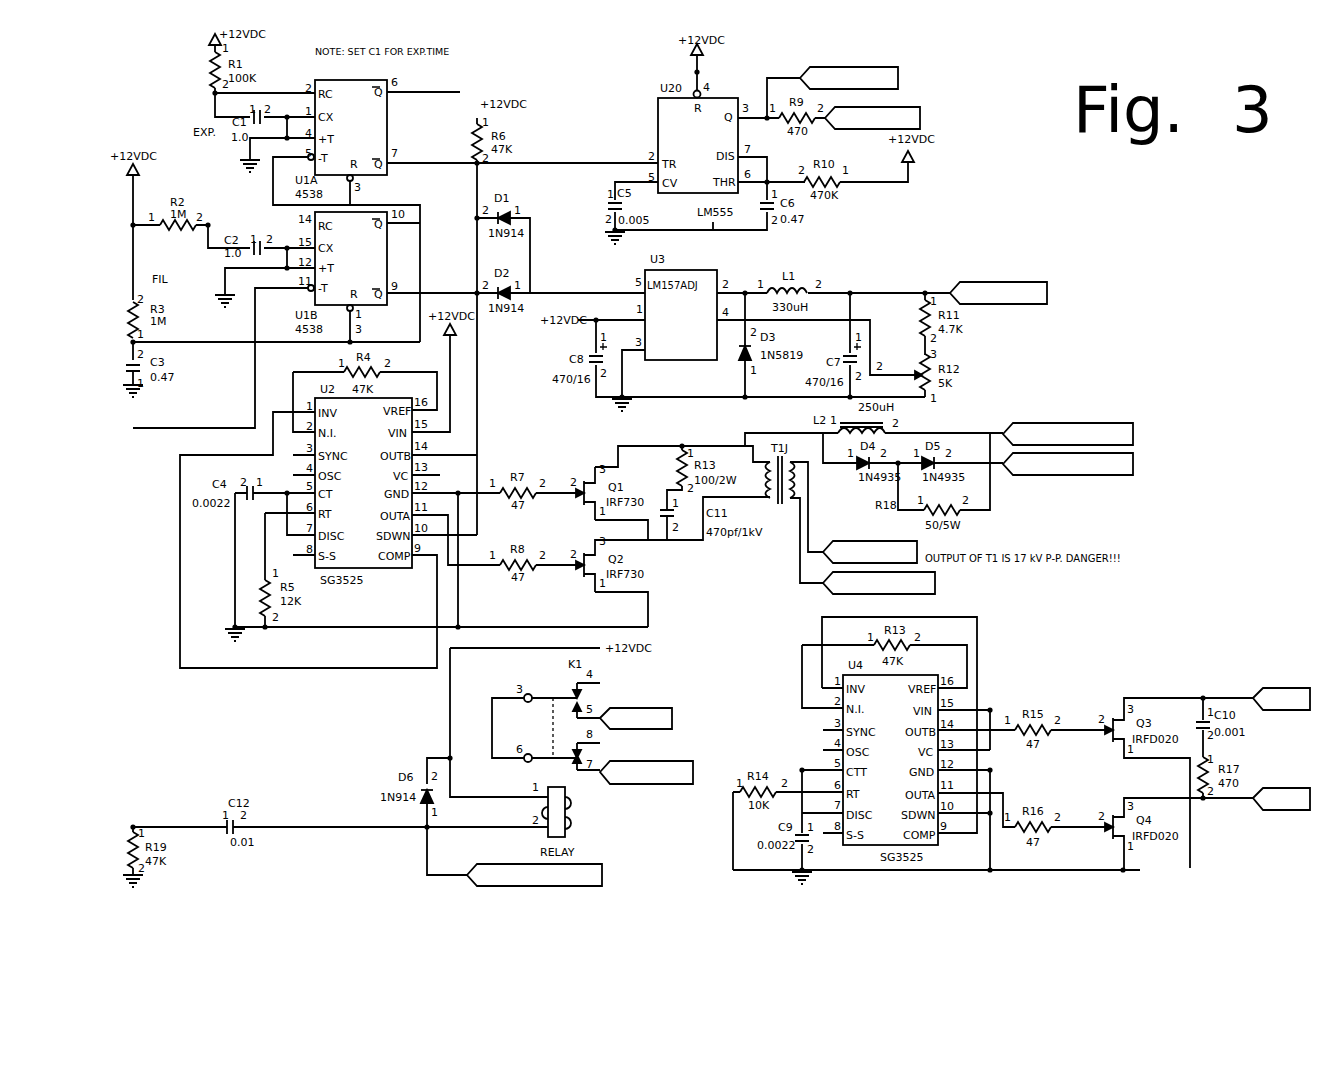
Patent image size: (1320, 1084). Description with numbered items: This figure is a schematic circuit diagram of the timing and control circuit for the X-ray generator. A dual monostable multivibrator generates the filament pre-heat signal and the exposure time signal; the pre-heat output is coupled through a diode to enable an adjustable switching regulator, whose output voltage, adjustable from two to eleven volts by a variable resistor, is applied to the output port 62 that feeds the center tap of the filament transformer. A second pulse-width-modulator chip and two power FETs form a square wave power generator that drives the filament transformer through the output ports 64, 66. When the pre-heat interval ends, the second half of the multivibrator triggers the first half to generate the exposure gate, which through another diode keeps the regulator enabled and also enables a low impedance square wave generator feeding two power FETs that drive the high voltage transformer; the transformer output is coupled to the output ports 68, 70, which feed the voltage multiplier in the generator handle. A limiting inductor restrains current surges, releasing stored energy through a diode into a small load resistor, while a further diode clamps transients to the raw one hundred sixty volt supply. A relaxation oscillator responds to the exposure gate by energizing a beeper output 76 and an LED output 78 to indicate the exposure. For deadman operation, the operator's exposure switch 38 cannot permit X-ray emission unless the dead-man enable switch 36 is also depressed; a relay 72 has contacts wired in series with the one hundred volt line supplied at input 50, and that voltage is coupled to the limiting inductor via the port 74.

The exposure buzzer output 76 is at (850, 67).
The exposure LED output 78 is at (905, 107).
The output port 62 is at (1032, 282).
The port 74 is at (1115, 423).
The output port 68 is at (852, 541).
The output port 70 is at (935, 583).
The dead-man enable switch 36 is at (614, 682).
The +100VDC supply input 50 is at (683, 761).
The relay 72 is at (571, 823).
The exposure switch 38 is at (602, 875).
The output port 64 is at (1295, 688).
The output port 66 is at (1295, 788).